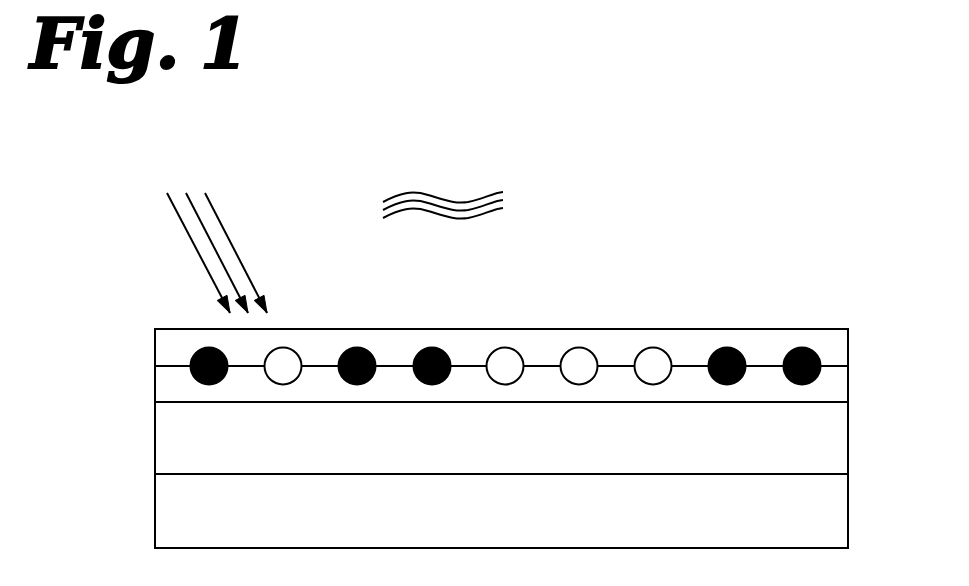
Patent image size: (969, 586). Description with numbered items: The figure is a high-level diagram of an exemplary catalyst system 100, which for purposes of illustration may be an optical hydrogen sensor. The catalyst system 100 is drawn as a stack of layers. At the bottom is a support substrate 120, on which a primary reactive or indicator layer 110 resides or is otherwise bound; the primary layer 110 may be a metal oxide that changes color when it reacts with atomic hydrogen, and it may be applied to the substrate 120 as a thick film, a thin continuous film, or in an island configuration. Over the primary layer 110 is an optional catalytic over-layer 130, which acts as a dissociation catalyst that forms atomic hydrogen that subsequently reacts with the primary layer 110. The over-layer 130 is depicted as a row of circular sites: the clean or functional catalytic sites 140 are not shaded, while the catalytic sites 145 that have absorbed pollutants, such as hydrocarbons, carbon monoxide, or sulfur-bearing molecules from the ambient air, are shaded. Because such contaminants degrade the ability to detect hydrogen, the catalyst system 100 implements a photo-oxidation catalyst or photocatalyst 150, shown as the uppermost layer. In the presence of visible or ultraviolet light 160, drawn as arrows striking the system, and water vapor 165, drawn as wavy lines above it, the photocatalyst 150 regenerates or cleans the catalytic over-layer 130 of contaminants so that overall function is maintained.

The catalyst system 100 is at (704, 259).
The primary reactive or indicator layer 110 is at (155, 447).
The support substrate 120 is at (155, 510).
The catalytic over-layer 130 is at (155, 383).
The clean catalytic sites 140 is at (567, 352).
The contaminated catalytic sites 145 is at (421, 351).
The photo-oxidation catalyst 150 is at (155, 343).
The light 160 is at (227, 233).
The water vapor 165 is at (443, 195).